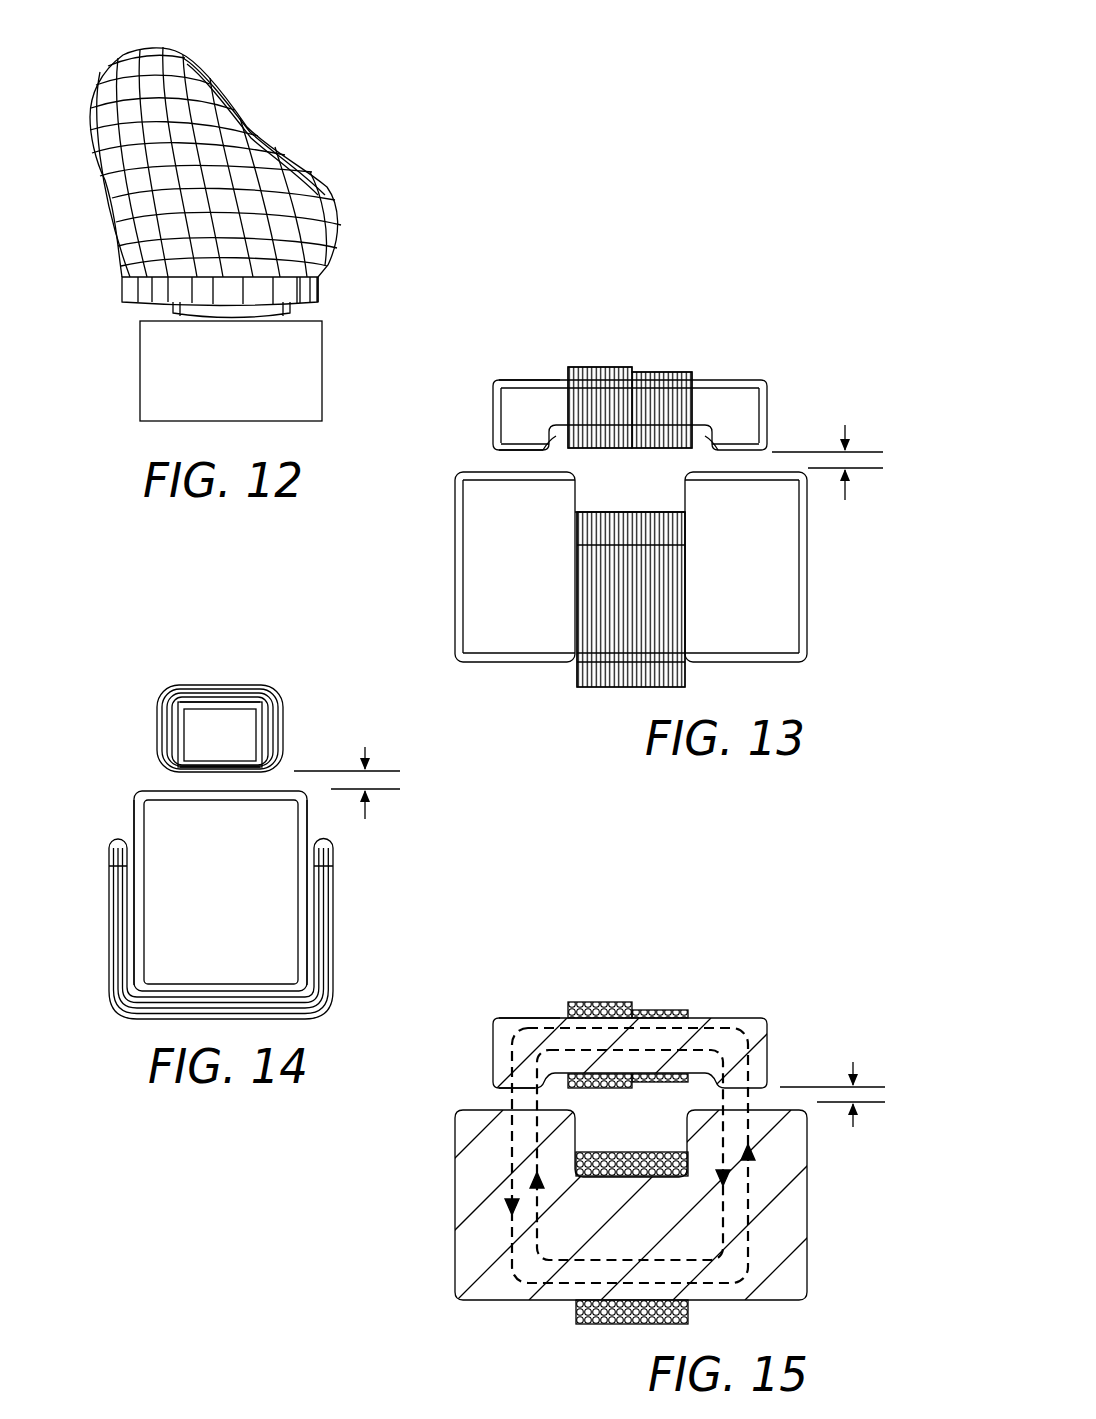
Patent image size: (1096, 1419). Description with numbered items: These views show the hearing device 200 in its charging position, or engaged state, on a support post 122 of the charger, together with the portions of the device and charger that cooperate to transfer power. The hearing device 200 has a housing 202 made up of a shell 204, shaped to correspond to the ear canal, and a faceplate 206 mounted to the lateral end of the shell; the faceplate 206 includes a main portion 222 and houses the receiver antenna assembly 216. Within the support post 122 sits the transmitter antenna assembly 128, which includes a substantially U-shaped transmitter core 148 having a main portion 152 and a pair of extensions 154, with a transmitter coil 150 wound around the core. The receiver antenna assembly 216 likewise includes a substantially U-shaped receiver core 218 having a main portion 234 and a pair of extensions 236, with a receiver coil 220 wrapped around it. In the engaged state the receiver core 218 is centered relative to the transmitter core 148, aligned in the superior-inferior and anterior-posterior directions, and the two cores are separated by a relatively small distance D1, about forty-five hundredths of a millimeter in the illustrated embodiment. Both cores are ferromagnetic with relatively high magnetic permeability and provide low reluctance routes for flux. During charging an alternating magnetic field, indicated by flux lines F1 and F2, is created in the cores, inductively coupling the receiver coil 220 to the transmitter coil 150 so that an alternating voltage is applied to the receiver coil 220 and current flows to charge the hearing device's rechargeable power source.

In FIG. 12, the hearing device 200 is at (226, 163).
In FIG. 12, the housing 202 is at (291, 145).
In FIG. 12, the shell 204 is at (212, 84).
In FIG. 12, the faceplate 206 is at (120, 287).
In FIG. 12, the main portion 222 is at (322, 287).
In FIG. 12, the support post 122 is at (211, 381).
In FIG. 13, the transmitter antenna assembly 128 is at (650, 575).
In FIG. 14, the transmitter antenna assembly 128 is at (252, 881).
In FIG. 15, the transmitter antenna assembly 128 is at (624, 1196).
In FIG. 13, the transmitter core 148 is at (637, 564).
In FIG. 14, the transmitter core 148 is at (232, 867).
In FIG. 15, the transmitter core 148 is at (624, 1180).
In FIG. 13, the transmitter coil 150 is at (580, 686).
In FIG. 14, the transmitter coil 150 is at (109, 921).
In FIG. 15, the transmitter coil 150 is at (588, 1152).
In FIG. 13, the main portion 152 is at (807, 612).
In FIG. 14, the main portion 152 is at (307, 887).
In FIG. 15, the main portion 152 is at (807, 1200).
In FIG. 13, the extensions 154 is at (473, 472).
In FIG. 14, the extensions 154 is at (149, 791).
In FIG. 15, the extensions 154 is at (469, 1110).
In FIG. 13, the receiver antenna assembly 216 is at (655, 384).
In FIG. 14, the receiver antenna assembly 216 is at (184, 750).
In FIG. 15, the receiver antenna assembly 216 is at (643, 1006).
In FIG. 13, the receiver core 218 is at (706, 423).
In FIG. 14, the receiver core 218 is at (199, 748).
In FIG. 15, the receiver core 218 is at (764, 1015).
In FIG. 13, the receiver coil 220 is at (643, 368).
In FIG. 14, the receiver coil 220 is at (246, 688).
In FIG. 15, the receiver coil 220 is at (647, 1006).
In FIG. 13, the main portion 234 is at (537, 380).
In FIG. 14, the main portion 234 is at (224, 700).
In FIG. 15, the main portion 234 is at (538, 1018).
In FIG. 13, the extensions 236 is at (533, 452).
In FIG. 14, the extensions 236 is at (235, 775).
In FIG. 15, the extensions 236 is at (496, 1087).
In FIG. 13, the distance D1 is at (827, 446).
In FIG. 14, the distance D1 is at (347, 764).
In FIG. 15, the distance D1 is at (832, 1077).
In FIG. 15, the flux line F1 is at (512, 1236).
In FIG. 15, the flux line F2 is at (537, 1150).